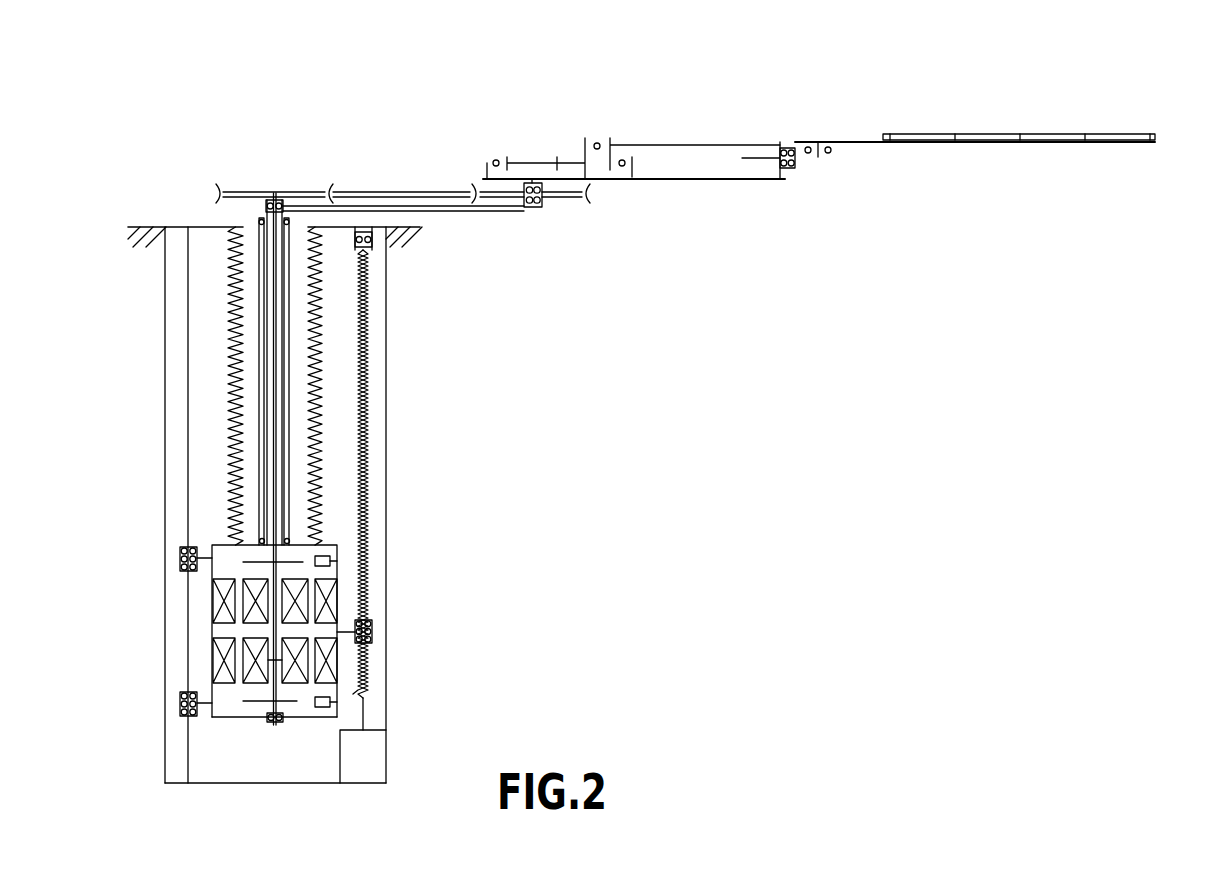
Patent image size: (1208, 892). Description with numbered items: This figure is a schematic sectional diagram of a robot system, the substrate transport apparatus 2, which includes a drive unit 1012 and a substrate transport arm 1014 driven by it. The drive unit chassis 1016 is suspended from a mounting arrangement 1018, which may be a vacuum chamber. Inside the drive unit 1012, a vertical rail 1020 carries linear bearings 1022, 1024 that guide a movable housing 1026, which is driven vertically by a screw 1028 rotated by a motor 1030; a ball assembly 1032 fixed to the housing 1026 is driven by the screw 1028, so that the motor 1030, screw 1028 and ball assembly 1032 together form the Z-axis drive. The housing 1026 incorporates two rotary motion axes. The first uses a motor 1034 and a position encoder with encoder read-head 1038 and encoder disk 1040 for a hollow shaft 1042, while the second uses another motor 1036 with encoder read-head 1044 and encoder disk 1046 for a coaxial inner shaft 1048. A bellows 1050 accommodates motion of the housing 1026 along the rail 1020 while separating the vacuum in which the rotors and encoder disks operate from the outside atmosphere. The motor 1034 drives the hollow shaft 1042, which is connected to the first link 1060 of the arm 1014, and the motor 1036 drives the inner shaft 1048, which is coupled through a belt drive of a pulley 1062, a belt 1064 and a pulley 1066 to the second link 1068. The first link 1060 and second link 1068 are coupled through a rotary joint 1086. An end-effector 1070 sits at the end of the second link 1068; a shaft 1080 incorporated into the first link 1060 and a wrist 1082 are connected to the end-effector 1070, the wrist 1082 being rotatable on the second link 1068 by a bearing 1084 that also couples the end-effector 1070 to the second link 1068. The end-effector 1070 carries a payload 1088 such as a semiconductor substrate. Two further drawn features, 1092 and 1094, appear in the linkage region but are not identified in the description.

The substrate transport apparatus 2 is at (1027, 99).
The drive unit 1012 is at (488, 599).
The substrate transport arm 1014 is at (651, 74).
The drive unit chassis 1016 is at (386, 500).
The mounting arrangement 1018 is at (418, 243).
The vertical rail 1020 is at (188, 450).
The linear bearing 1022 is at (178, 570).
The linear bearing 1024 is at (178, 710).
The movable housing 1026 is at (240, 720).
The screw 1028 is at (366, 425).
The motor 1030 is at (368, 770).
The ball assembly 1032 is at (377, 629).
The motor 1034 is at (212, 603).
The motor 1036 is at (212, 650).
The encoder read-head 1038 is at (338, 560).
The encoder disk 1040 is at (303, 561).
The hollow shaft 1042 is at (262, 214).
The encoder read-head 1044 is at (340, 708).
The encoder disk 1046 is at (290, 703).
The coaxial inner shaft 1048 is at (282, 200).
The bellows 1050 is at (233, 355).
The first link 1060 is at (486, 212).
The pulley 1062 is at (265, 193).
The belt 1064 is at (415, 193).
The pulley 1066 is at (572, 196).
The second link 1068 is at (717, 181).
The end-effector 1070 is at (1005, 145).
The shaft 1080 is at (543, 204).
The wrist 1082 is at (808, 160).
The bearing 1084 is at (780, 169).
The rotary joint 1086 is at (525, 209).
The payload 1088 is at (1123, 133).
The drive link 1092 is at (577, 165).
The link pivot 1094 is at (625, 167).